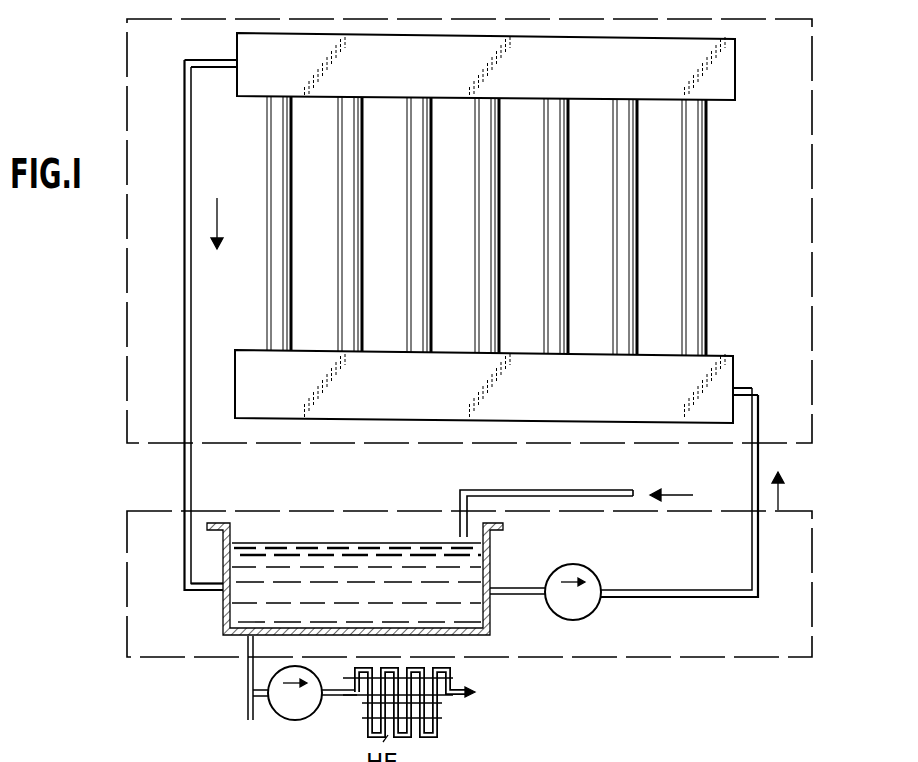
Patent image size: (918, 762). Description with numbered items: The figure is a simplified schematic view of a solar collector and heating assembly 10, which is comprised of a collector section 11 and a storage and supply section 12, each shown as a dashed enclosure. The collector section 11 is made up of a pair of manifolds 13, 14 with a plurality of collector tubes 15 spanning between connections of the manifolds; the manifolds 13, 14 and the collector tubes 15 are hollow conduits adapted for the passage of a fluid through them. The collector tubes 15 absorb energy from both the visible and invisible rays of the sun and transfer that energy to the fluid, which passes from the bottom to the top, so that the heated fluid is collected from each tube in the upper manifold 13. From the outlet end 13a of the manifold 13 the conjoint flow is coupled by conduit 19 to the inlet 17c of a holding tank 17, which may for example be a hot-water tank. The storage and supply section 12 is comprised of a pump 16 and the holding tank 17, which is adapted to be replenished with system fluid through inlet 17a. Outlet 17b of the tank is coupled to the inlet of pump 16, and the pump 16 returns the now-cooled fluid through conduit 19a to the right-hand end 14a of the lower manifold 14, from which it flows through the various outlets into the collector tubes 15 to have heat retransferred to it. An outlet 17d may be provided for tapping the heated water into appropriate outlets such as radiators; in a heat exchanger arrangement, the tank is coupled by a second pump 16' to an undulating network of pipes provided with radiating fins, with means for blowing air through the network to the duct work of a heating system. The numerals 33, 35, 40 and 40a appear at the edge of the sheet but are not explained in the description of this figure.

The solar collector and heating assembly 10 is at (106, 444).
The collector section 11 is at (812, 105).
The storage and supply section 12 is at (812, 638).
The manifold 13 is at (717, 87).
The outlet end of manifold 13a is at (237, 92).
The manifold 14 is at (582, 398).
The right-hand end of manifold 14a is at (733, 362).
The collector tubes 15 is at (277, 282).
The pump 16 is at (587, 608).
The pump 16' is at (294, 709).
The holding tank 17 is at (477, 637).
The inlet 17a is at (546, 494).
The outlet 17b is at (515, 597).
The inlet 17c is at (204, 590).
The outlet 17d is at (245, 672).
The conduit 19 is at (187, 336).
The conduit 19a is at (752, 532).
The element 33 is at (578, 761).
The element 35 is at (454, 758).
The element 40 is at (756, 756).
The element 40a is at (677, 756).